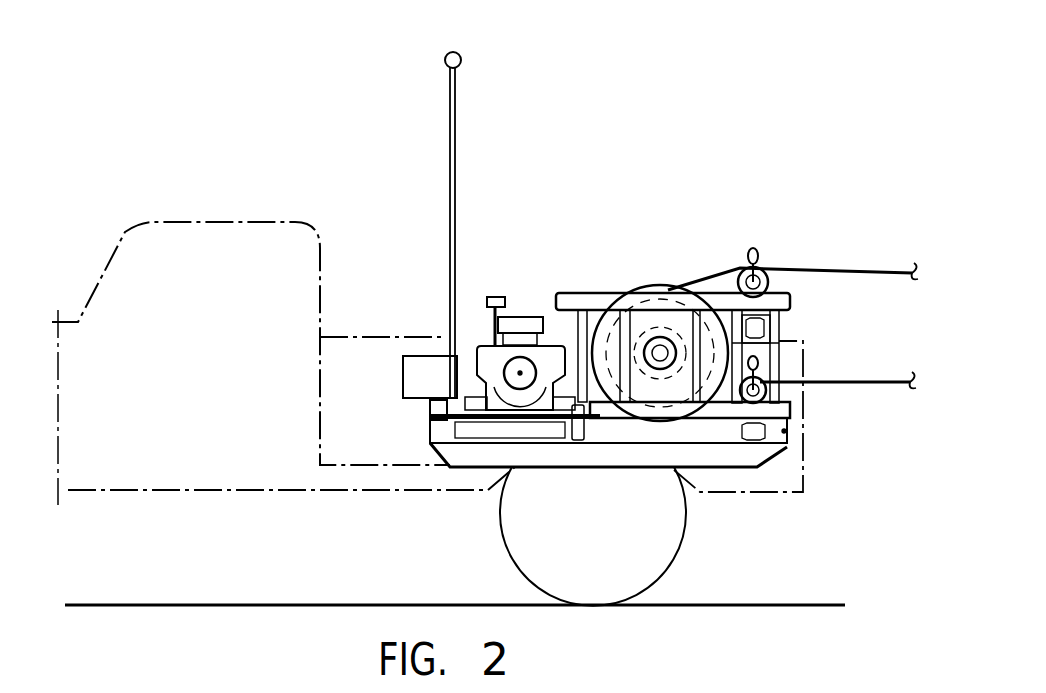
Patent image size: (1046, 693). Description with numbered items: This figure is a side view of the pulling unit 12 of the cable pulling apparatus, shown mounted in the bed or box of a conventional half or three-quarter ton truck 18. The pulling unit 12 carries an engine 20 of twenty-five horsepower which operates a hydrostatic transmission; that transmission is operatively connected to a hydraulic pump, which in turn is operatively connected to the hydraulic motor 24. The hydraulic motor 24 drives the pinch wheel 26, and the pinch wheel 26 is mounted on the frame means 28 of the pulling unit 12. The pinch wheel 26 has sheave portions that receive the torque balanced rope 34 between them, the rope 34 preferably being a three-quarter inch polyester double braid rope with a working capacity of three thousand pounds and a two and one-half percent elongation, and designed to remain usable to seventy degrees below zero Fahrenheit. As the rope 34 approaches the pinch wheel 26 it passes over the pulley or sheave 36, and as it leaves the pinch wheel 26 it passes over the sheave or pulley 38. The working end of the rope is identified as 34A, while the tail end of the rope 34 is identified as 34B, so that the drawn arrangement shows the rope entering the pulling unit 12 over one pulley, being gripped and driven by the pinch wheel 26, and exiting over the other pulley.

The pulling unit 12 is at (673, 322).
The truck 18 is at (285, 237).
The engine 20 is at (518, 318).
The hydraulic motor 24 is at (668, 340).
The pinch wheel 26 is at (628, 287).
The frame means 28 is at (758, 467).
The torque balanced rope 34 is at (815, 263).
The working end of the rope 34A is at (887, 388).
The tail end of the rope 34B is at (876, 268).
The pulley or sheave 36 is at (778, 392).
The sheave or pulley 38 is at (765, 276).